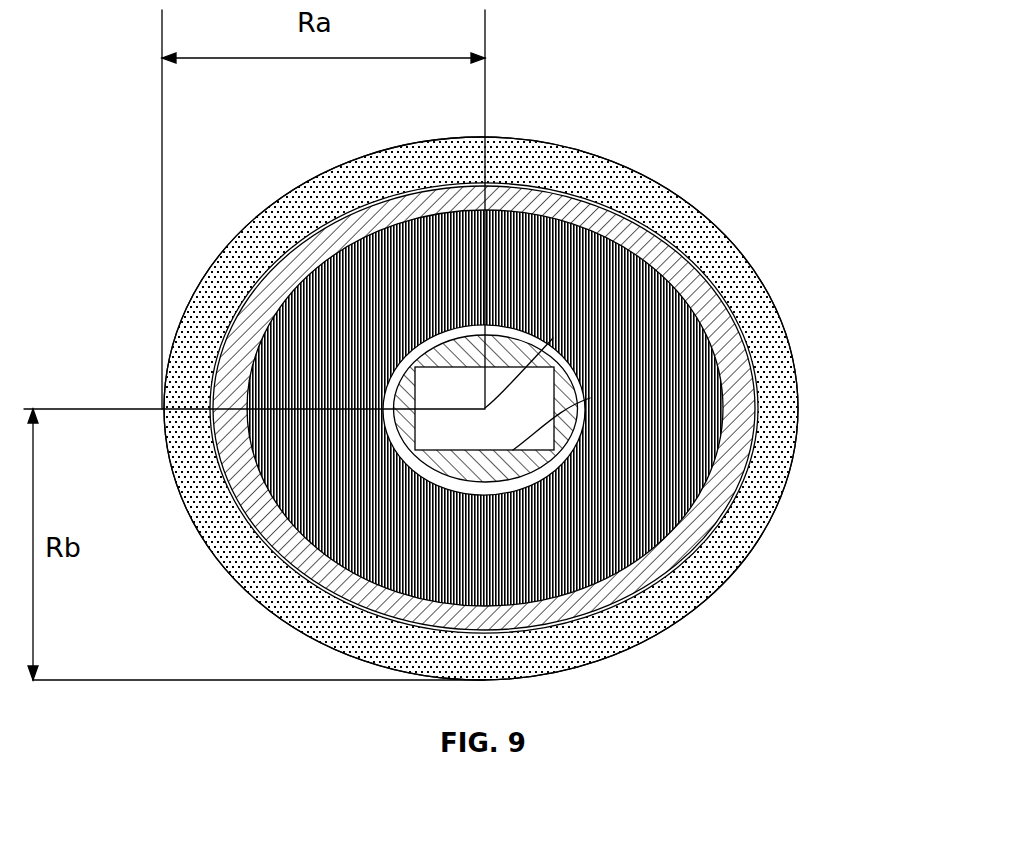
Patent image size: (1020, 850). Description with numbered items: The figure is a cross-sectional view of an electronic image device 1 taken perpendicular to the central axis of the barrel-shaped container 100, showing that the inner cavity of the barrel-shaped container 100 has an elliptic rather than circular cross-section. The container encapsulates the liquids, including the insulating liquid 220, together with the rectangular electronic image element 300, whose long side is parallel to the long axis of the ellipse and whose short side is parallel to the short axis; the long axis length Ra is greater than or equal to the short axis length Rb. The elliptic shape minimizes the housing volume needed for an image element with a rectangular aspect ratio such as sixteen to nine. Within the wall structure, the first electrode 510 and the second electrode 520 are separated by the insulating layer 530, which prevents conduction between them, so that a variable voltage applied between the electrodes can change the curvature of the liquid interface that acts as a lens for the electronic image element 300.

The electronic image device 1 is at (151, 189).
The barrel-shaped container 100 is at (668, 190).
The insulating liquid 220 is at (612, 577).
The electronic image element 300 is at (715, 453).
The first electrode 510 is at (712, 518).
The second electrode 520 is at (712, 325).
The insulating layer 530 is at (163, 410).